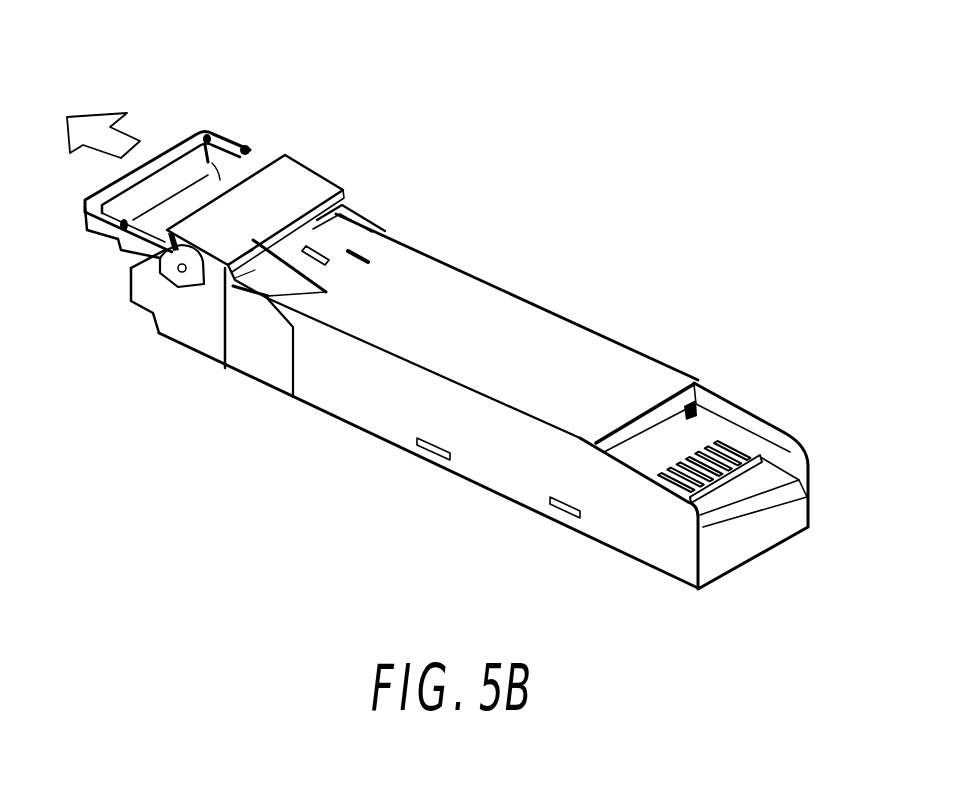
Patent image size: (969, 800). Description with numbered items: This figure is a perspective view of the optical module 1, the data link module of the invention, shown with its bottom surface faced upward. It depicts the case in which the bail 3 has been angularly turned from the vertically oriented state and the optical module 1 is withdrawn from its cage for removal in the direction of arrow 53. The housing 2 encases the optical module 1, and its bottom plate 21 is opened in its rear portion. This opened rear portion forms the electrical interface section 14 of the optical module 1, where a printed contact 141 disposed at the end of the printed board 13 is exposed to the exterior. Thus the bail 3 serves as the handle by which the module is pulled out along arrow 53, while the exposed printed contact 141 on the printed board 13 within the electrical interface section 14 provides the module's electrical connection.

The optical module 1 is at (614, 199).
The housing 2 is at (375, 395).
The bottom plate 21 is at (588, 372).
The bail 3 is at (107, 240).
The arrow 53 is at (132, 136).
The printed board 13 is at (650, 450).
The electrical interface section 14 is at (813, 324).
The printed contact 141 is at (732, 440).